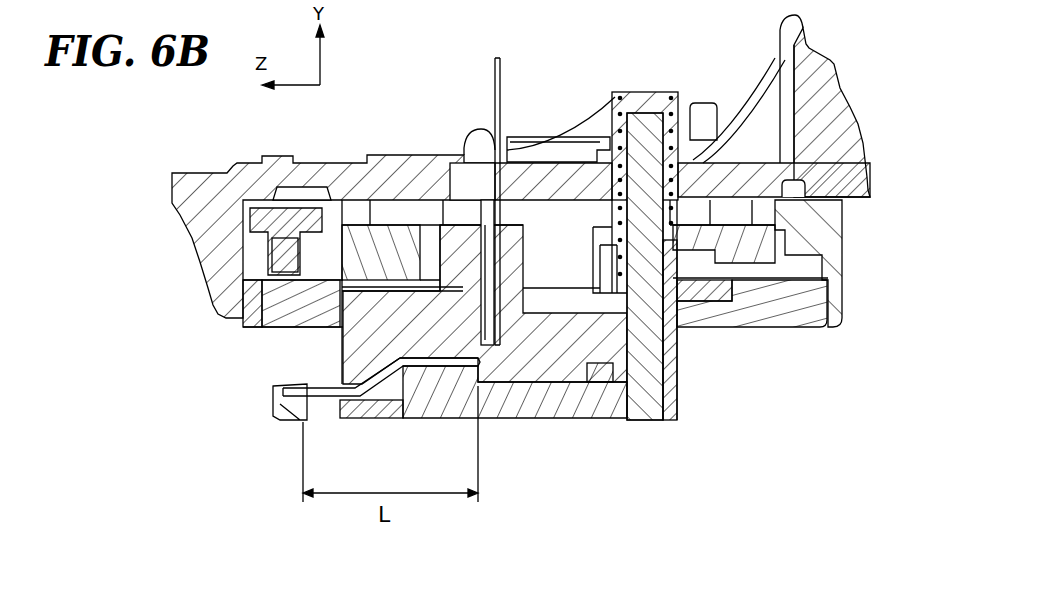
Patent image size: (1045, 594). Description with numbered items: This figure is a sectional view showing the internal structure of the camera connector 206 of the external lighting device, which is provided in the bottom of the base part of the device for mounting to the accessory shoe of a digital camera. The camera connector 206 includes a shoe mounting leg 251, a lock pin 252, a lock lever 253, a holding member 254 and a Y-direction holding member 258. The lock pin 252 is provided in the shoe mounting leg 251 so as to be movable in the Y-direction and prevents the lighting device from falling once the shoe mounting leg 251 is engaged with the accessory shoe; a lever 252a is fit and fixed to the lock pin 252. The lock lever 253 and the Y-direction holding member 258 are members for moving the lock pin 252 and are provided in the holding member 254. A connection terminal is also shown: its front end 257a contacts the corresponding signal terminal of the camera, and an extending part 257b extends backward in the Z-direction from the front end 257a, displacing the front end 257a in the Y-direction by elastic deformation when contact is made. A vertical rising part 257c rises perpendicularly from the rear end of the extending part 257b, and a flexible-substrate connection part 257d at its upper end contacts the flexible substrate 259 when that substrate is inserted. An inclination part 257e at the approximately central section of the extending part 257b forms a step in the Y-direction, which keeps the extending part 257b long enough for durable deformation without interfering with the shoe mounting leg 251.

The camera connector 206 is at (199, 293).
The shoe mounting leg 251 is at (553, 405).
The lock pin 252 is at (649, 418).
The lever 252a is at (690, 292).
The lock lever 253 is at (828, 245).
The holding member 254 is at (352, 334).
The front end 257a is at (285, 425).
The extending part 257b is at (340, 418).
The vertical rising part 257c is at (491, 360).
The flexible-substrate connection part 257d is at (486, 224).
The inclination part 257e is at (372, 374).
The Y-direction holding member 258 is at (772, 318).
The flexible substrate 259 is at (501, 107).